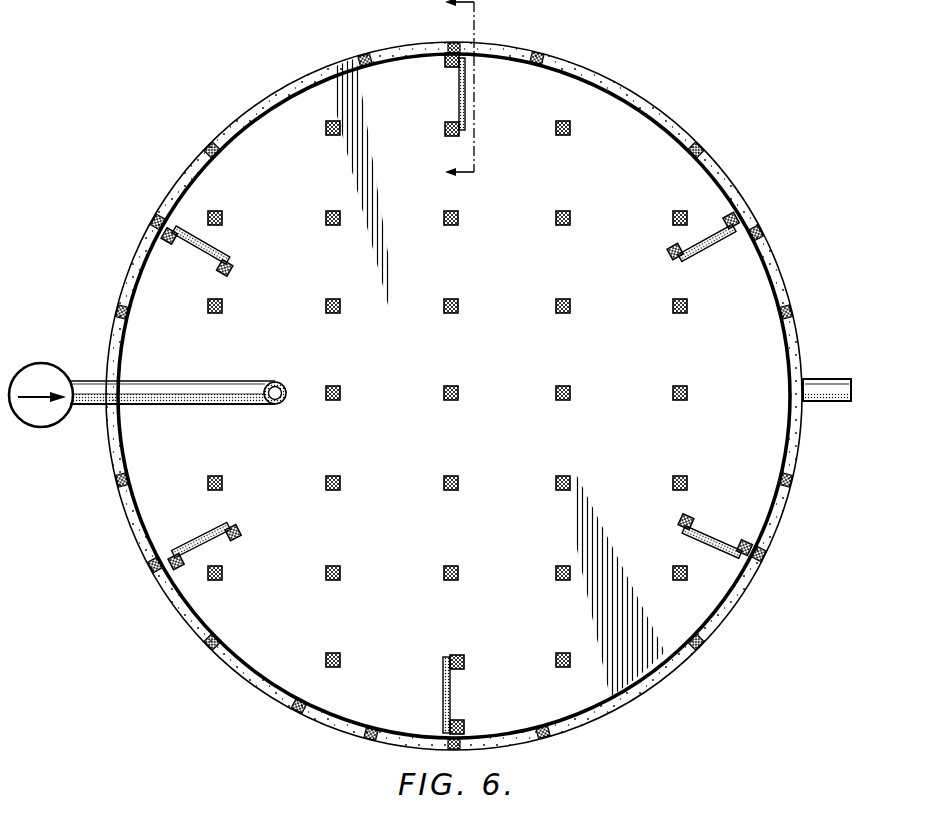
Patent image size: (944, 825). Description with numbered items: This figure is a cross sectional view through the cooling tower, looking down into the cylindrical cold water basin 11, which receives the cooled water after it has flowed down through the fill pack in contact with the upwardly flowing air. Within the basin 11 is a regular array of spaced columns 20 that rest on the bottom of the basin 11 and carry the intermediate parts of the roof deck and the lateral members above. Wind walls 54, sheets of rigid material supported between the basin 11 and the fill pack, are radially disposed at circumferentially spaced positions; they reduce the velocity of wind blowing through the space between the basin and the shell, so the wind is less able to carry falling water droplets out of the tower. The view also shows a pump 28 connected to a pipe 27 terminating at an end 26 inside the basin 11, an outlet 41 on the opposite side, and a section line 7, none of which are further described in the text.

The basin 11 is at (665, 106).
The columns 20 is at (555, 306).
The pipe end 26 is at (272, 406).
The supply pipe 27 is at (196, 380).
The pump 28 is at (38, 363).
The outlet conduit 41 is at (842, 401).
The wind walls 54 is at (459, 97).
The section line 7- 7 is at (452, 88).